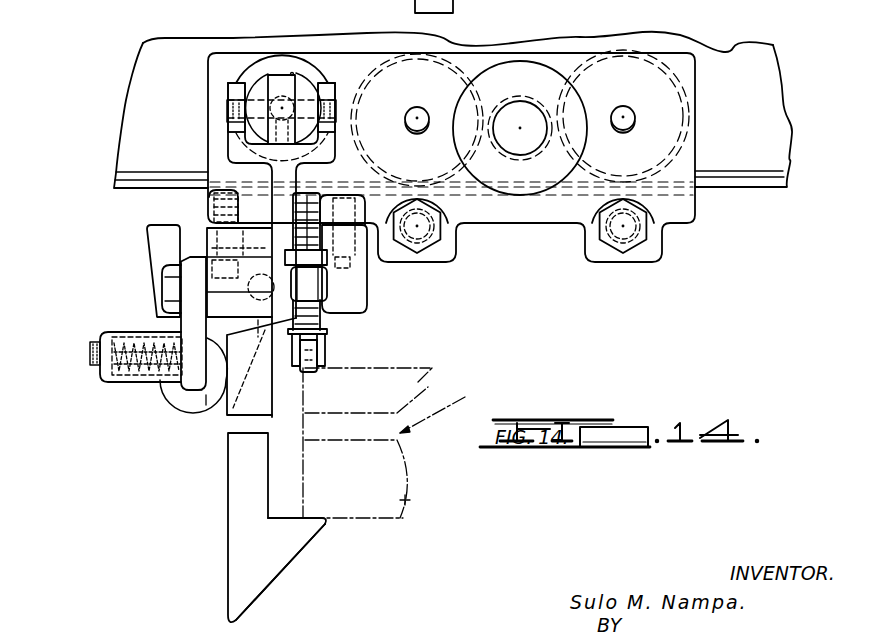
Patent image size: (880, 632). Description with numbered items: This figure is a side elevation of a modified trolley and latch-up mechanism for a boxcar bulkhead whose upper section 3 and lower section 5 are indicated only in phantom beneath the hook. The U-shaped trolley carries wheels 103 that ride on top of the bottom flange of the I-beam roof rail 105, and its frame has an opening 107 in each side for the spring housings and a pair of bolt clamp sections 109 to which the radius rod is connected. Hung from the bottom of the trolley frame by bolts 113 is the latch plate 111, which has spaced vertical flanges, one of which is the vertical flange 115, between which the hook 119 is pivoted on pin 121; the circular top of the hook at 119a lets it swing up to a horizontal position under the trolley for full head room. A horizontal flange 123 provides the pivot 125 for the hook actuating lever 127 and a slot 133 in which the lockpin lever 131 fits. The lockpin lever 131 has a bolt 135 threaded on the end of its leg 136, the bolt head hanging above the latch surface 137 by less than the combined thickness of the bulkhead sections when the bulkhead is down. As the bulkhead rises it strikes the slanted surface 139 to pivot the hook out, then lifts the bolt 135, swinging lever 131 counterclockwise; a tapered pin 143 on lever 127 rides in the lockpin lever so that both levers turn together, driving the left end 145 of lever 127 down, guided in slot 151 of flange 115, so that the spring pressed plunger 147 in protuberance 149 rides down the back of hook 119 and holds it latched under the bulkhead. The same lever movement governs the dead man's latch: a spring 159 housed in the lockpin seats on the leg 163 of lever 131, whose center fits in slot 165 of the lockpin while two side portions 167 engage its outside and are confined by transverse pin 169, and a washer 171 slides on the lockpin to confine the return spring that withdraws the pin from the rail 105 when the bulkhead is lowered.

The upper section 3 is at (412, 500).
The lower section 5 is at (434, 359).
The wheels 103 is at (431, 50).
The roof rail 105 is at (735, 50).
The opening 107 is at (523, 100).
The bolt clamp sections 109 is at (437, 239).
The latch plate 111 is at (365, 243).
The bolts 113 is at (187, 215).
The vertical flange 115 is at (203, 403).
The hook 119 is at (238, 547).
The circular top of hook 119a is at (205, 227).
The pin 121 is at (261, 366).
The horizontal flange 123 is at (322, 316).
The pivot 125 is at (170, 285).
The hook actuating lever 127 is at (181, 323).
The lockpin lever 131 is at (226, 149).
The slot 133 is at (237, 223).
The bolt 135 is at (327, 346).
The leg 136 is at (362, 298).
The latch surface 137 is at (299, 515).
The slanted surface 139 is at (290, 570).
The tapered pin 143 is at (215, 275).
The left end of lever 145 is at (195, 392).
The spring pressed plunger 147 is at (229, 386).
The protuberance 149 is at (122, 383).
The slot 151 is at (182, 236).
The spring 159 is at (321, 67).
The leg 163 is at (282, 78).
The slot 165 is at (293, 72).
The side portions 167 is at (228, 92).
The transverse pin 169 is at (336, 108).
The washer 171 is at (269, 58).